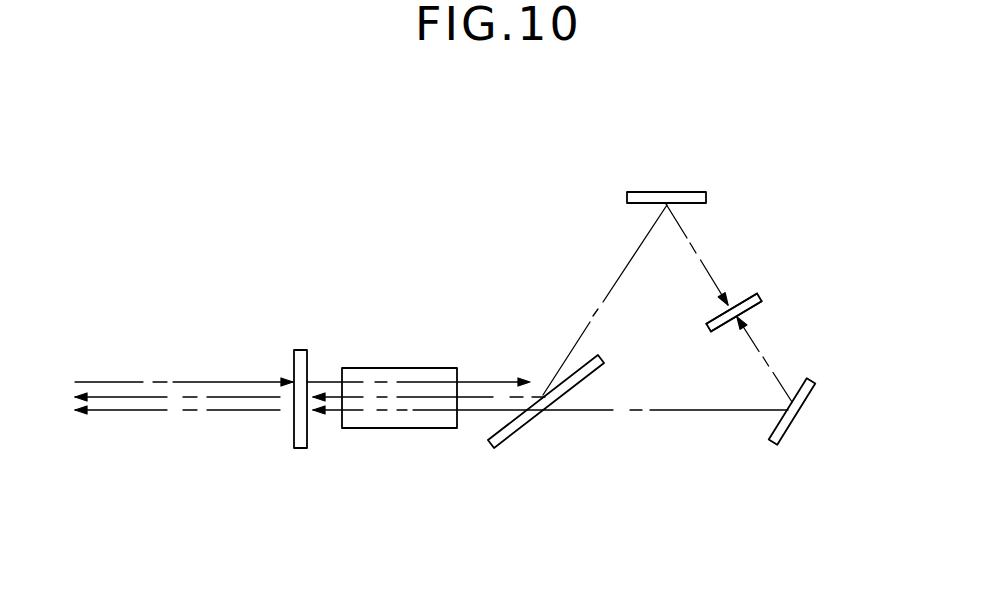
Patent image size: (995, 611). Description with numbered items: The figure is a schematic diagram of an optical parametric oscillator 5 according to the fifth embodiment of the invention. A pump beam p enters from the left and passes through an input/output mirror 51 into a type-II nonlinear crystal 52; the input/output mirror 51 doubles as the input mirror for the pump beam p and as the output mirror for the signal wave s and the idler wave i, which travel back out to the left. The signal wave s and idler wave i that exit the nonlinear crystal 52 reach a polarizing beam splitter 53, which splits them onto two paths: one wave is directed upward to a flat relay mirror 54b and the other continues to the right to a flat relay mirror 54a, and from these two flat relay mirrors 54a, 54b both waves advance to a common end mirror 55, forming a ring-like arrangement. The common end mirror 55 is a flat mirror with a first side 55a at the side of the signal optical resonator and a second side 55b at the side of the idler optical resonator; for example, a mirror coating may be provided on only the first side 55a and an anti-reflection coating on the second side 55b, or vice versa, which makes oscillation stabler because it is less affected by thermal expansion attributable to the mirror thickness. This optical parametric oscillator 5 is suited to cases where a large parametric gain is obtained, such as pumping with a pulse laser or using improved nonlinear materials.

The optical parametric oscillator 5 is at (430, 228).
The input/output mirror 51 is at (302, 367).
The type-II nonlinear crystal 52 is at (400, 430).
The polarizing beam splitter 53 is at (530, 423).
The flat relay mirror 54a is at (800, 410).
The flat relay mirror 54b is at (668, 192).
The common end mirror 55 is at (760, 296).
The first side 55a is at (753, 318).
The second side 55b is at (746, 299).
The pump beam p is at (188, 381).
The idler wave i is at (165, 398).
The signal wave s is at (232, 412).